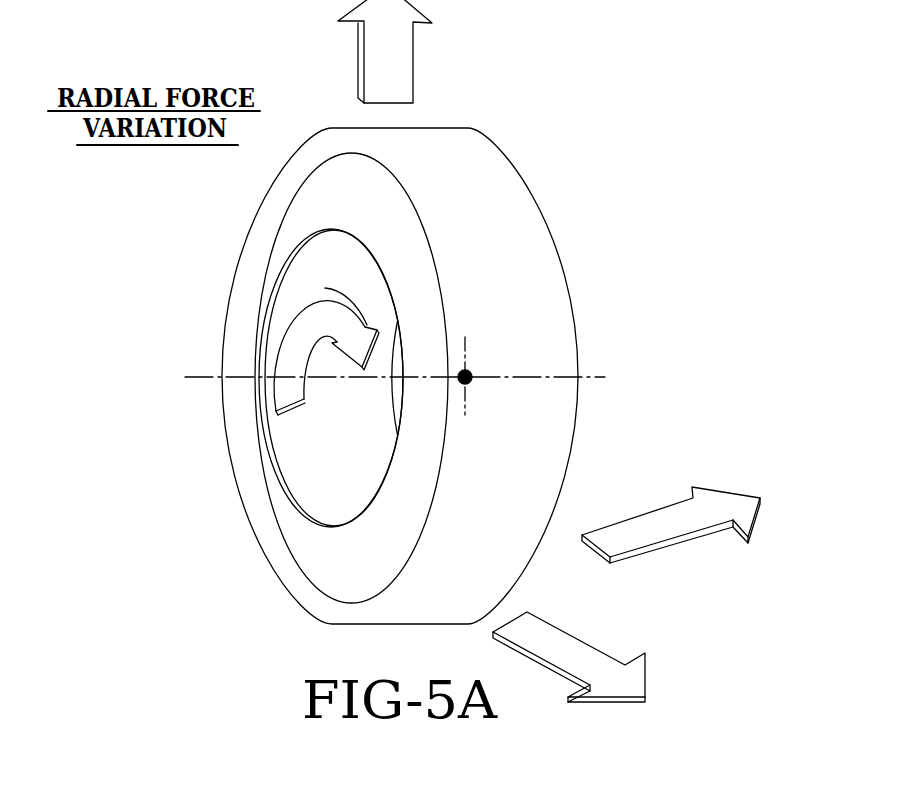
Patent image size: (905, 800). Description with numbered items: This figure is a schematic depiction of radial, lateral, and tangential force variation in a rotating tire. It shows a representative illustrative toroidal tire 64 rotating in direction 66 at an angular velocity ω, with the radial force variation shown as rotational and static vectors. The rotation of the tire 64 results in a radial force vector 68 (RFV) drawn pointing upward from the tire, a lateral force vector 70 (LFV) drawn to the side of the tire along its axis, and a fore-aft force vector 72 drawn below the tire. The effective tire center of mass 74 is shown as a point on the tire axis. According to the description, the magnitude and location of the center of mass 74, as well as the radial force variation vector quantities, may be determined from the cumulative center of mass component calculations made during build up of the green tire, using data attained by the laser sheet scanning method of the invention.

The toroidal tire 64 is at (505, 212).
The direction of rotation 66 is at (294, 328).
The radial force vector 68 is at (377, 47).
The lateral force vector 70 is at (625, 537).
The fore-aft force vector 72 is at (540, 632).
The effective tire center of mass 74 is at (470, 372).